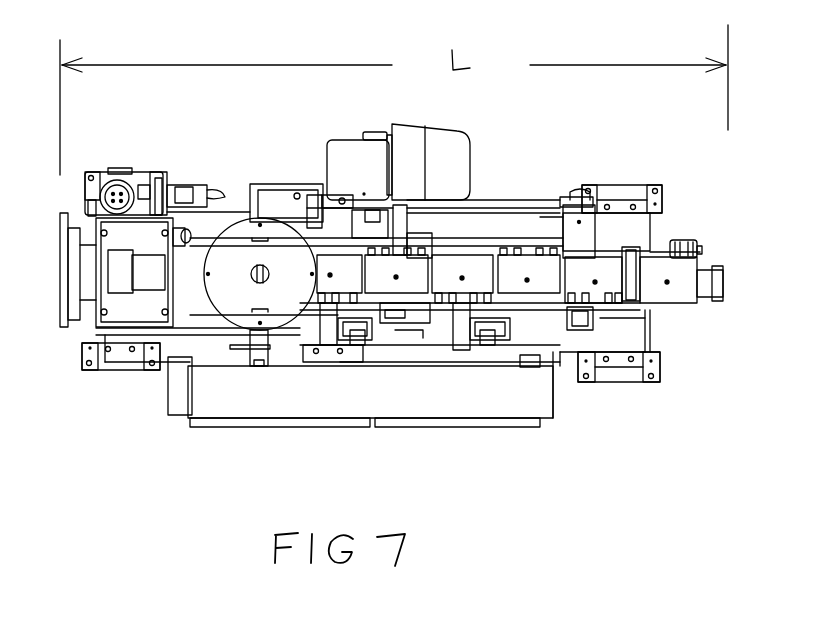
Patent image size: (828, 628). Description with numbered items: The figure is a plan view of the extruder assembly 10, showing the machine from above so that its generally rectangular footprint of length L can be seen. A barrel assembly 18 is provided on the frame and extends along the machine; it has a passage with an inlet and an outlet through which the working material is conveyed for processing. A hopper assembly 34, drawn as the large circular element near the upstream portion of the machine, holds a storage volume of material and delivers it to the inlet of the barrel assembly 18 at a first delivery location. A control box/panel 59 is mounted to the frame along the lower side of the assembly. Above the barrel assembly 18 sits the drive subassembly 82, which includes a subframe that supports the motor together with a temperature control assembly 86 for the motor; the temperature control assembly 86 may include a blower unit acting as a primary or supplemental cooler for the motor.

The extruder assembly 10 is at (46, 530).
The barrel assembly 18 is at (520, 262).
The hopper assembly 34 is at (290, 212).
The control box/panel 59 is at (430, 428).
The drive subassembly 82 is at (485, 140).
The temperature control assembly 86 is at (430, 128).